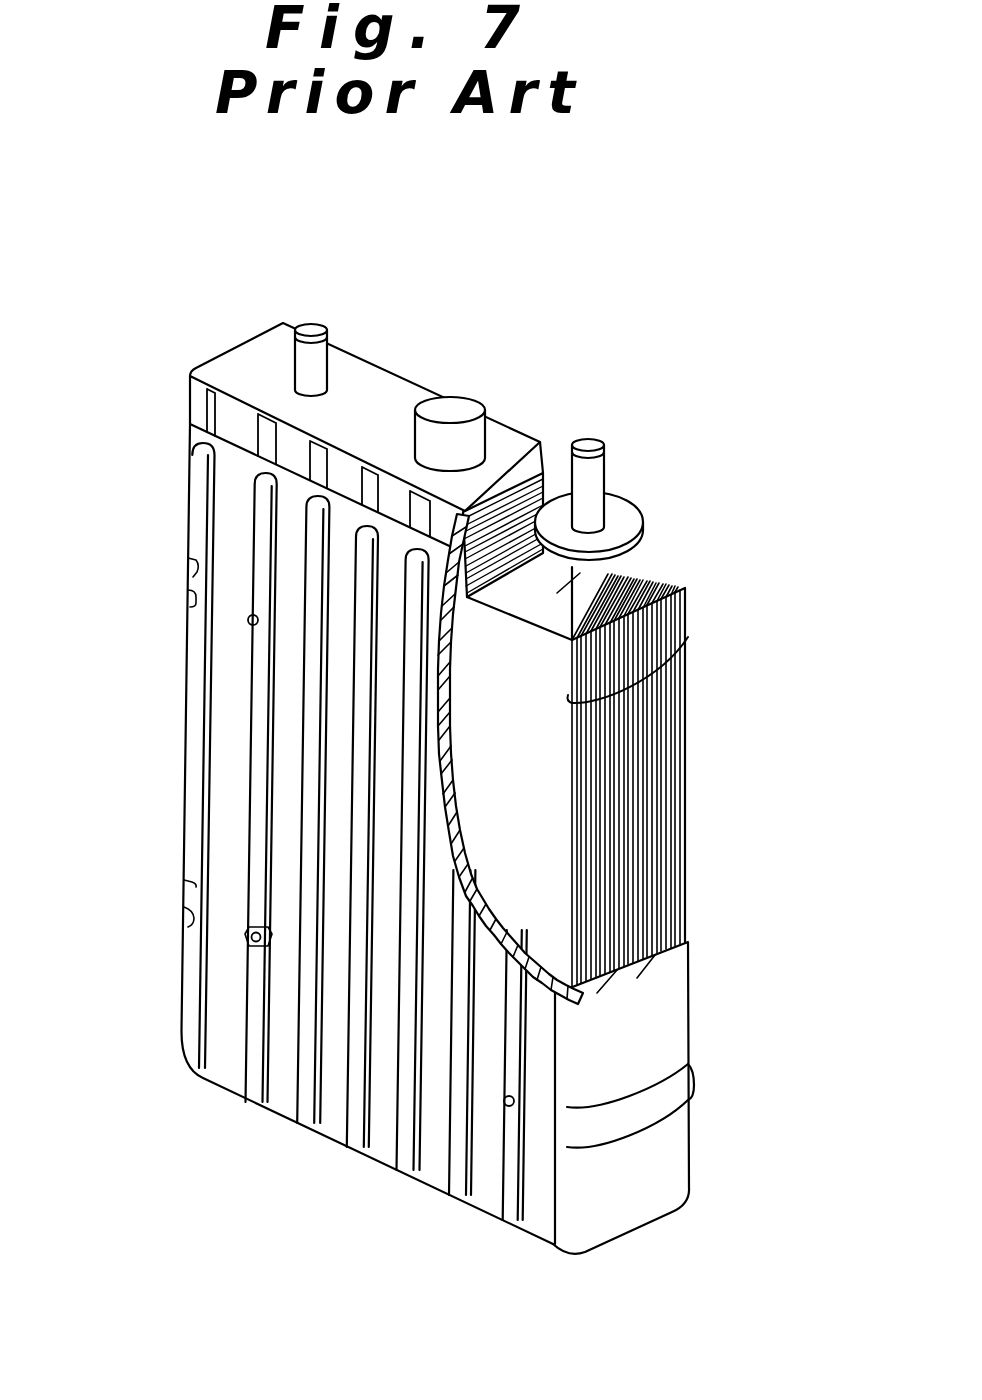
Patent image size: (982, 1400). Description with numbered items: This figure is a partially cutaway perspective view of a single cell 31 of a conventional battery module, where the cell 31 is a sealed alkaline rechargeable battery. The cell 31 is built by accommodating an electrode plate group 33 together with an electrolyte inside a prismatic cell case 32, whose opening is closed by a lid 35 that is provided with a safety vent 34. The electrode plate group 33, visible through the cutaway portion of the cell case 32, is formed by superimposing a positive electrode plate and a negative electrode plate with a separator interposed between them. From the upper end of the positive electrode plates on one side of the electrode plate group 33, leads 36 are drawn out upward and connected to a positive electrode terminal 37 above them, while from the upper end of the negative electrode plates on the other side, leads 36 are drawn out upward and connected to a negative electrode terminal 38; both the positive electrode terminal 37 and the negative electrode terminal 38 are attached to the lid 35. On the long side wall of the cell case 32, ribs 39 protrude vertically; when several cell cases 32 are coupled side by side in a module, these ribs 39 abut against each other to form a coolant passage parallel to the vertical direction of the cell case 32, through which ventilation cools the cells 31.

The cell 31 is at (165, 666).
The cell case 32 is at (190, 530).
The electrode plate group 33 is at (688, 637).
The safety vent 34 is at (467, 413).
The lid 35 is at (403, 381).
The leads 36 is at (638, 553).
The positive electrode terminal 37 is at (593, 449).
The negative electrode terminal 38 is at (310, 325).
The ribs 39 is at (253, 1062).